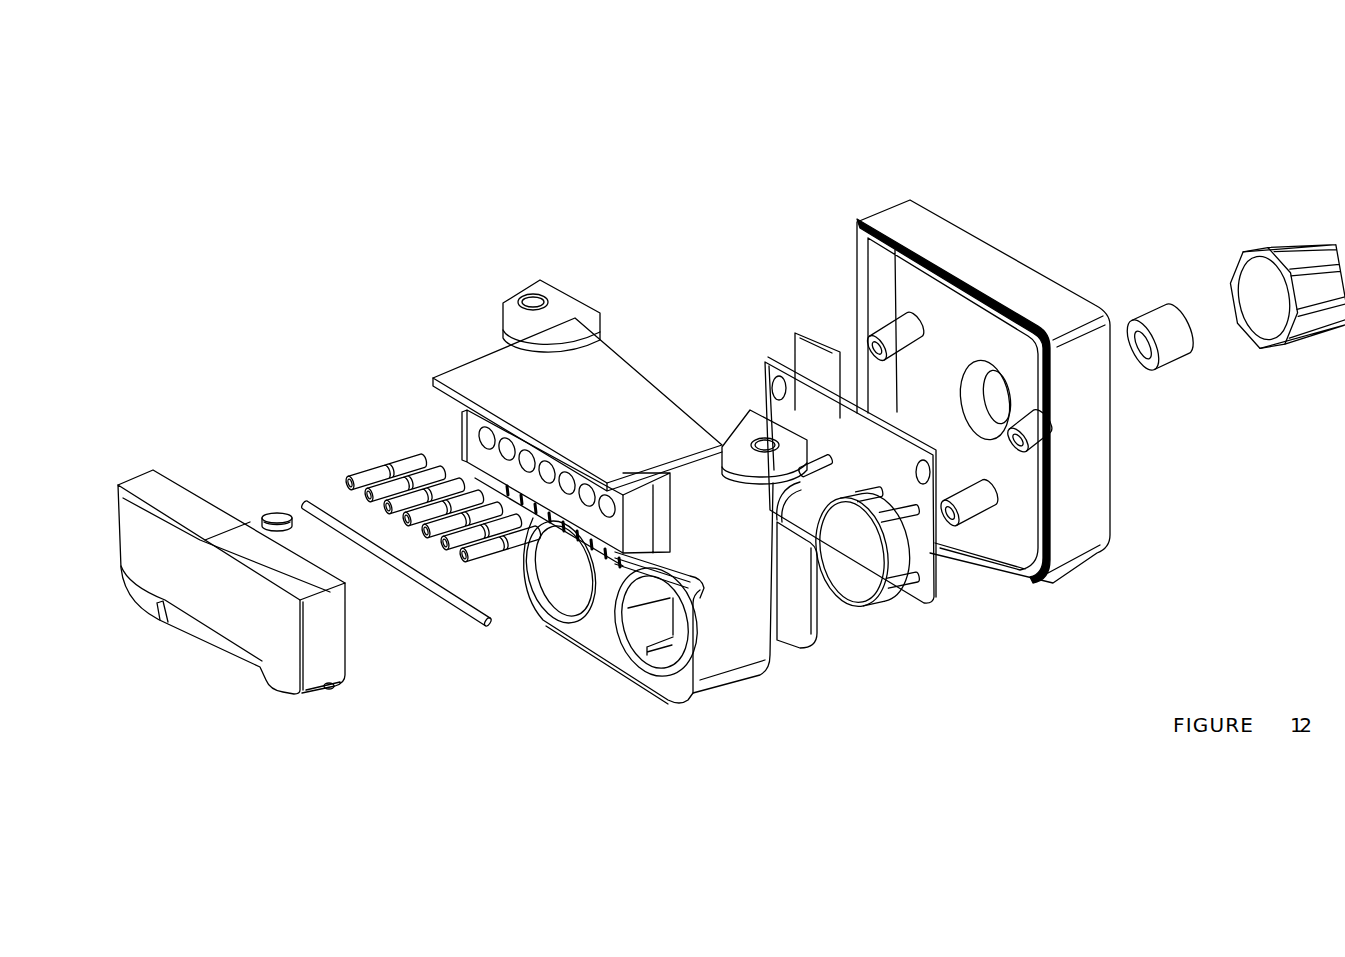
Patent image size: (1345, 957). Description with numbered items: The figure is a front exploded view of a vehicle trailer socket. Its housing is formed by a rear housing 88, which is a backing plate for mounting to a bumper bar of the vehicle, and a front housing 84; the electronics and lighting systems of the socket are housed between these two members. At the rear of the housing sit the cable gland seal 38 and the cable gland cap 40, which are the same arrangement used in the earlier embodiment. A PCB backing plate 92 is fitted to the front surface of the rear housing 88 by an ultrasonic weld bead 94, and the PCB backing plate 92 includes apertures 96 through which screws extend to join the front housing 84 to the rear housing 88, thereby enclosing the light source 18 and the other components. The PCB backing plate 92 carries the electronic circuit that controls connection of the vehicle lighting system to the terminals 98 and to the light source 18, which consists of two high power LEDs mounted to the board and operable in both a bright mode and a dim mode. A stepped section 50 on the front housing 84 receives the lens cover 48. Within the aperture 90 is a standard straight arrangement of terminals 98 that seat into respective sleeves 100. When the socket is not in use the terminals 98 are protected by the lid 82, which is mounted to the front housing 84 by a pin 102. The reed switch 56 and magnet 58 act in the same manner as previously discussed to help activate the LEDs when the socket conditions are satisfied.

The light source 18 is at (860, 617).
The cable gland seal 38 is at (1172, 295).
The cable gland cap 40 is at (1273, 238).
The lens cover 48 is at (788, 657).
The stepped section 50 is at (682, 692).
The reed switch 56 is at (803, 333).
The magnet 58 is at (279, 527).
The lid 82 is at (187, 628).
The front housing 84 is at (623, 687).
The rear housing 88 is at (1033, 270).
The aperture 90 is at (462, 449).
The PCB backing plate 92 is at (757, 372).
The ultrasonic weld bead 94 is at (953, 290).
The apertures 96 is at (951, 527).
The terminals 98 is at (446, 563).
The sleeves 100 is at (592, 472).
The pin 102 is at (373, 565).